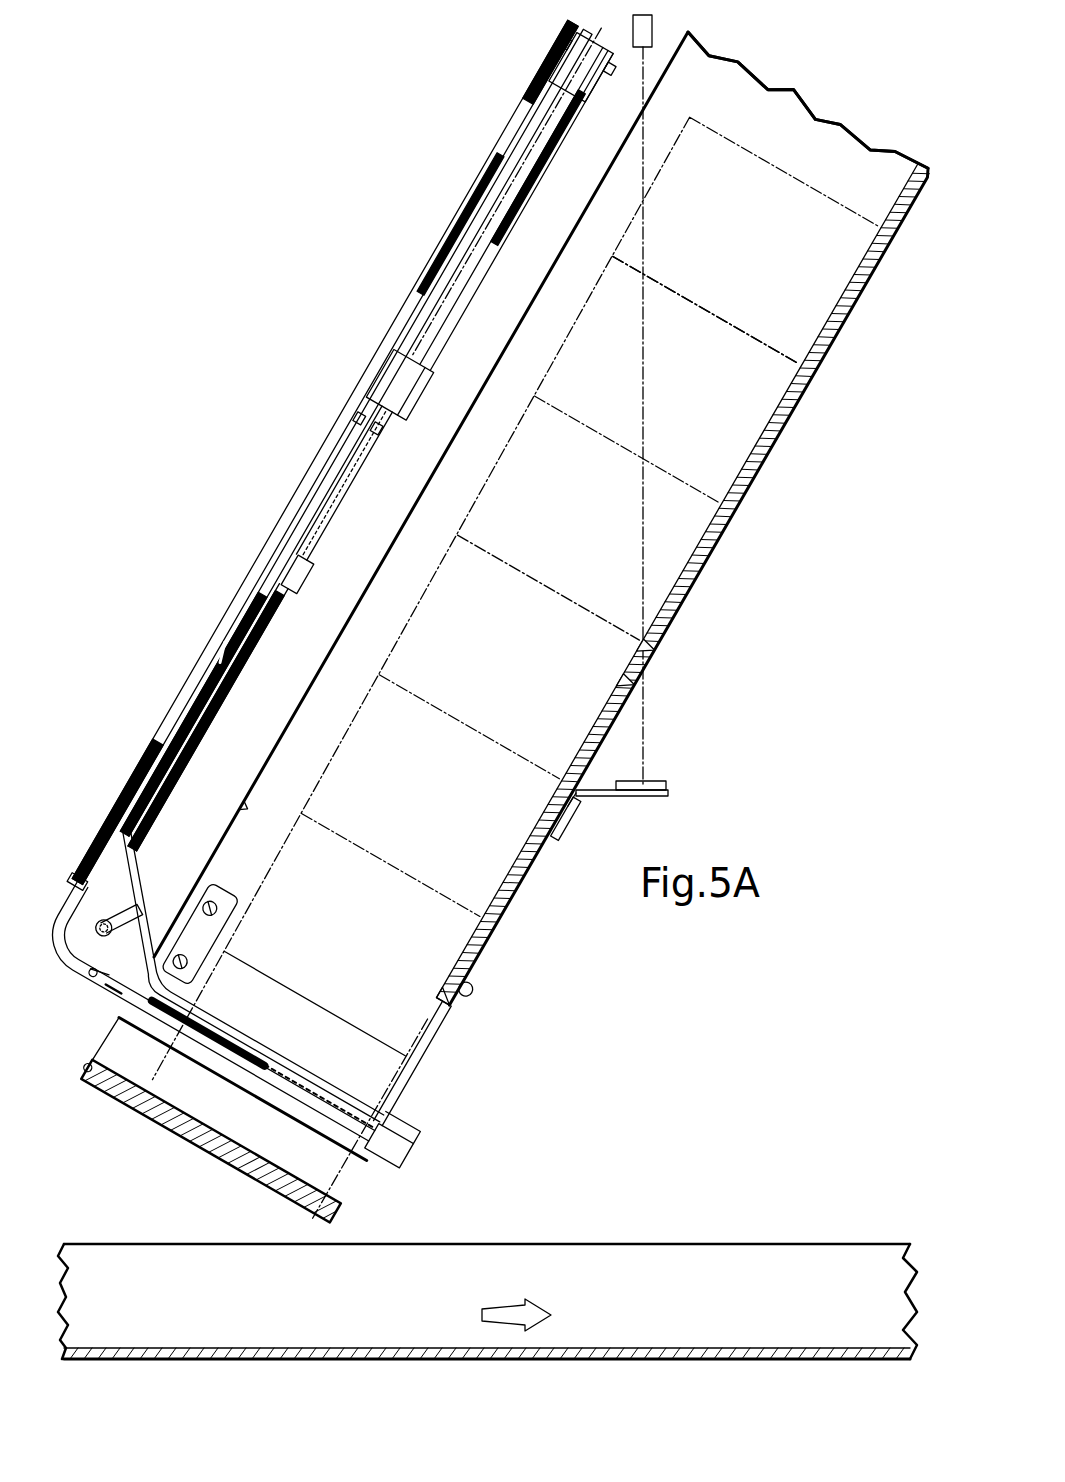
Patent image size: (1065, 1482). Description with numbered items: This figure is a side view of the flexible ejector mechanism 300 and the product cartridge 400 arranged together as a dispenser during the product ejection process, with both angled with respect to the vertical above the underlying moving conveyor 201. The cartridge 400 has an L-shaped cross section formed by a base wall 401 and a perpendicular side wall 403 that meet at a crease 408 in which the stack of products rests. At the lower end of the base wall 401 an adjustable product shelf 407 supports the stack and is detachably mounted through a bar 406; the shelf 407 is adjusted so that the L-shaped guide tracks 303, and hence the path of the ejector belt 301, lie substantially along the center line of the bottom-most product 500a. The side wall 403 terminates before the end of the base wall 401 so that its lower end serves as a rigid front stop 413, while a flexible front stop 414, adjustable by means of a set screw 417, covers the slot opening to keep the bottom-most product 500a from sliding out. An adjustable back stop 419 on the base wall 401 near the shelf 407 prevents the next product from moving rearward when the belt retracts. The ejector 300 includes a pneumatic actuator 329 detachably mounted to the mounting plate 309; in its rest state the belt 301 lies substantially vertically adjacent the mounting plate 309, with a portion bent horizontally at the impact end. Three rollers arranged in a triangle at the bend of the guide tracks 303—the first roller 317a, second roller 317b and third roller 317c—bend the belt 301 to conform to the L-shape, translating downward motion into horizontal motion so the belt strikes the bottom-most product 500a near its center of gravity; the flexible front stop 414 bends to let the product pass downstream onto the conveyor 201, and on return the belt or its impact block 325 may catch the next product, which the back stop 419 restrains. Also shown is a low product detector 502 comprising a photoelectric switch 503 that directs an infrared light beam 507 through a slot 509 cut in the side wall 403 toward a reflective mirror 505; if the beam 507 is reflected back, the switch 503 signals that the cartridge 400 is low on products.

The conveyor 201 is at (660, 1348).
The flexible ejector mechanism 300 is at (360, 283).
The ejector belt 301 is at (137, 855).
The L-shaped guide tracks 303 is at (418, 1162).
The mounting plate 309 is at (447, 227).
The first roller 317a is at (80, 882).
The second roller 317b is at (92, 972).
The third roller 317c is at (103, 925).
The impact block 325 is at (110, 1005).
The pneumatic actuator 329 is at (493, 247).
The product cartridge 400 is at (752, 528).
The base wall 401 is at (318, 717).
The side wall 403 is at (520, 893).
The bar 406 is at (86, 1070).
The product shelf 407 is at (252, 1153).
The crease 408 is at (528, 812).
The rigid front stop 413 is at (440, 1000).
The flexible front stop 414 is at (440, 1050).
The set screw 417 is at (470, 990).
The back stop 419 is at (222, 900).
The bottom-most product 500a is at (331, 1048).
The low product detector 502 is at (720, 598).
The photoelectric switch 503 is at (652, 32).
The reflective mirror 505 is at (665, 785).
The infrared light beam 507 is at (645, 432).
The slot 509 is at (650, 652).